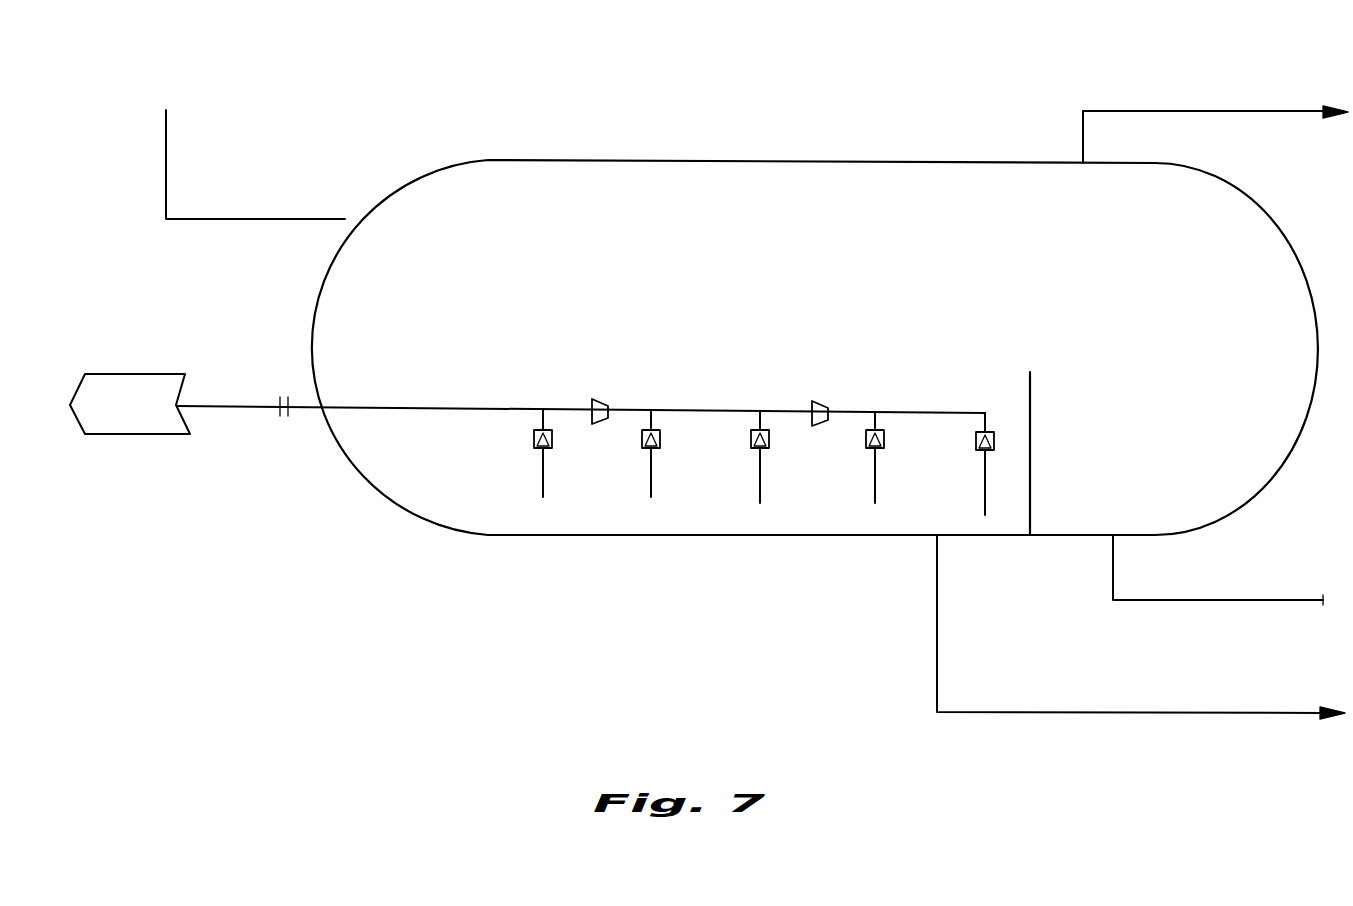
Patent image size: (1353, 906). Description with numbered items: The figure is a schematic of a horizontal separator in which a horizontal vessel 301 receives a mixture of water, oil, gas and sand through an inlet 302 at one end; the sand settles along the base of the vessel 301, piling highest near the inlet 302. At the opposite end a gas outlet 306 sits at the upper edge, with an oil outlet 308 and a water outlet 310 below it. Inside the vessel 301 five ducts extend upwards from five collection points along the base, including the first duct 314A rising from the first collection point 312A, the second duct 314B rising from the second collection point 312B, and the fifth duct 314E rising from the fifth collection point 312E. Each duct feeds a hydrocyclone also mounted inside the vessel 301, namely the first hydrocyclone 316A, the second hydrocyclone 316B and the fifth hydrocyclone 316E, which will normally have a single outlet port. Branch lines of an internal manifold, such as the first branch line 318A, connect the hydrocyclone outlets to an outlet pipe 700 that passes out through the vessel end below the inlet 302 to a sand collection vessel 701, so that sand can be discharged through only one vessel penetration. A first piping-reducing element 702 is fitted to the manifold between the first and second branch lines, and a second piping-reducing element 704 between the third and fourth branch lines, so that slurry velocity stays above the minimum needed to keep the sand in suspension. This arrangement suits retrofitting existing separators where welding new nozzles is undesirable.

The horizontal vessel 301 is at (872, 163).
The inlet 302 is at (232, 219).
The gas outlet 306 is at (1144, 111).
The oil outlet 308 is at (1148, 598).
The water outlet 310 is at (1073, 712).
The outlet pipe 700 is at (368, 408).
The sand collection vessel 701 is at (130, 375).
The first piping-reducing element 702 is at (600, 403).
The second piping-reducing element 704 is at (822, 401).
The first branch line 318A is at (542, 420).
The first hydrocyclone 316A is at (535, 438).
The first duct 314A is at (543, 472).
The first collection point 312A is at (543, 490).
The second hydrocyclone 316B is at (660, 437).
The second duct 314B is at (651, 472).
The second collection point 312B is at (651, 497).
The fifth hydrocyclone 316E is at (976, 444).
The fifth duct 314E is at (985, 487).
The fifth collection point 312E is at (985, 515).